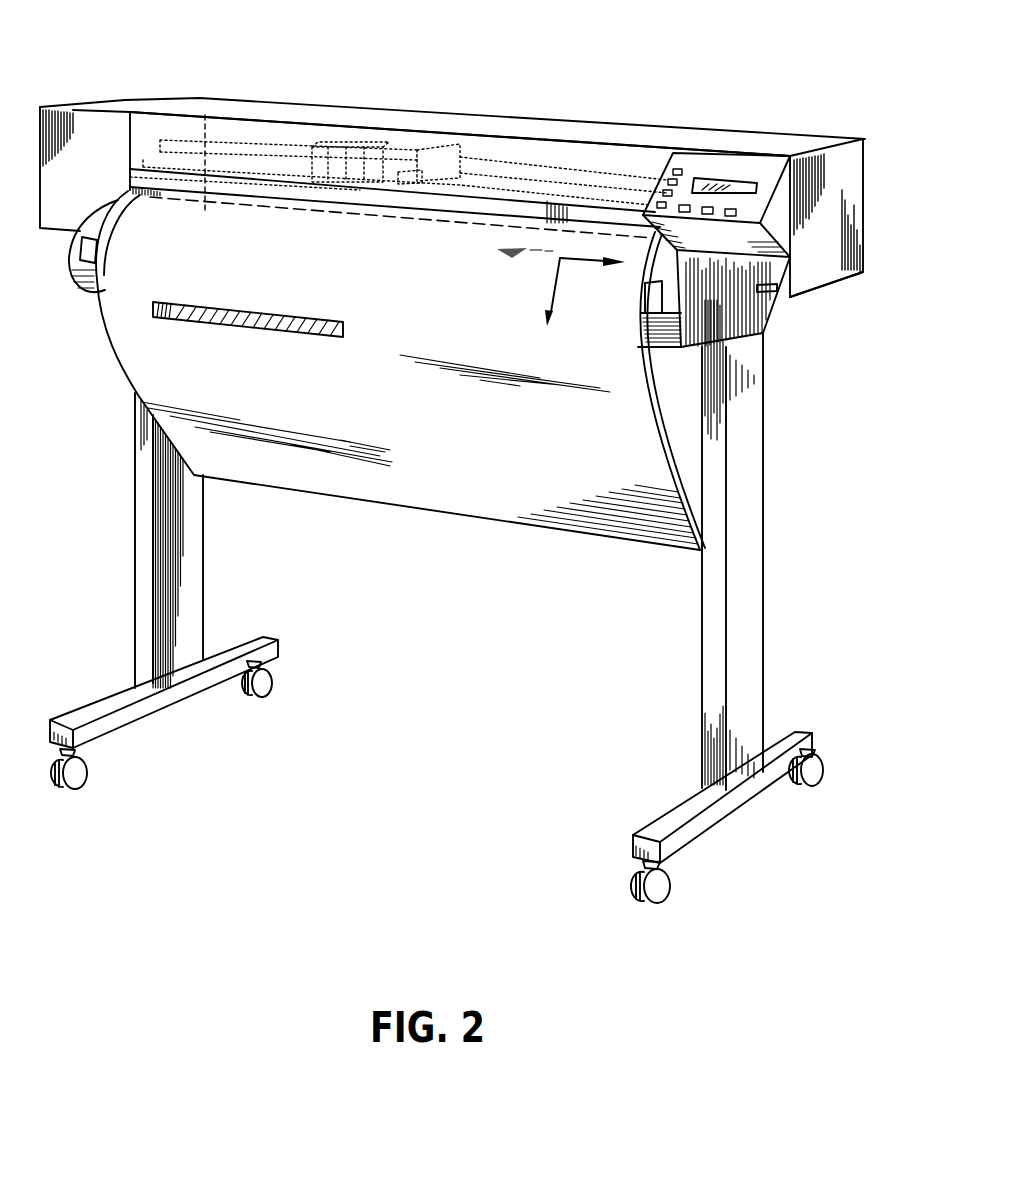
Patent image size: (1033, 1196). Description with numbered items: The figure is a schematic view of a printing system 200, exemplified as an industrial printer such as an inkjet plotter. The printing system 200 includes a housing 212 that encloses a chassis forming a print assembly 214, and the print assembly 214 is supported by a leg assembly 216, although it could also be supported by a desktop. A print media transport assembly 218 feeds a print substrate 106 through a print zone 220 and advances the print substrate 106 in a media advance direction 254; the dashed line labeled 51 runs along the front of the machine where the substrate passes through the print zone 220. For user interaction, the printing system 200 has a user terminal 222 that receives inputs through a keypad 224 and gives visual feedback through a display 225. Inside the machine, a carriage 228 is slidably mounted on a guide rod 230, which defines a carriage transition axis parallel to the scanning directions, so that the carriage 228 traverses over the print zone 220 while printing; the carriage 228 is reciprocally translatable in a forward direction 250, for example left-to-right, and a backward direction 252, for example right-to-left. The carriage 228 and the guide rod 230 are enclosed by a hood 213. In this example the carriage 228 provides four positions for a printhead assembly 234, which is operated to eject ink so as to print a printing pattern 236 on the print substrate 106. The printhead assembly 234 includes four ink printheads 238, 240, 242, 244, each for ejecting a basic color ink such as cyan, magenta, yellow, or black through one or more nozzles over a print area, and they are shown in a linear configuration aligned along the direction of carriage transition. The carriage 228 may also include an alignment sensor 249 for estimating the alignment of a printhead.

The printing system 200 is at (690, 90).
The housing 212 is at (128, 110).
The hood 213 is at (657, 135).
The print assembly 214 is at (857, 178).
The leg assembly 216 is at (760, 500).
The print media transport assembly 218 is at (150, 166).
The print zone 220 is at (348, 209).
The user terminal 222 is at (830, 305).
The keypad 224 is at (713, 218).
The display 225 is at (766, 209).
The carriage 228 is at (450, 137).
The guide rod 230 is at (543, 163).
The printhead assembly 234 is at (296, 155).
The printing pattern 236 is at (300, 338).
The ink printhead 238 is at (333, 152).
The ink printhead 240 is at (344, 148).
The ink printhead 242 is at (357, 147).
The ink printhead 244 is at (370, 148).
The alignment sensor 249 is at (407, 178).
The forward direction 250 is at (587, 263).
The backward direction 252 is at (512, 262).
The media advance direction 254 is at (553, 290).
The print medium 51 is at (210, 203).
The print substrate 106 is at (376, 480).